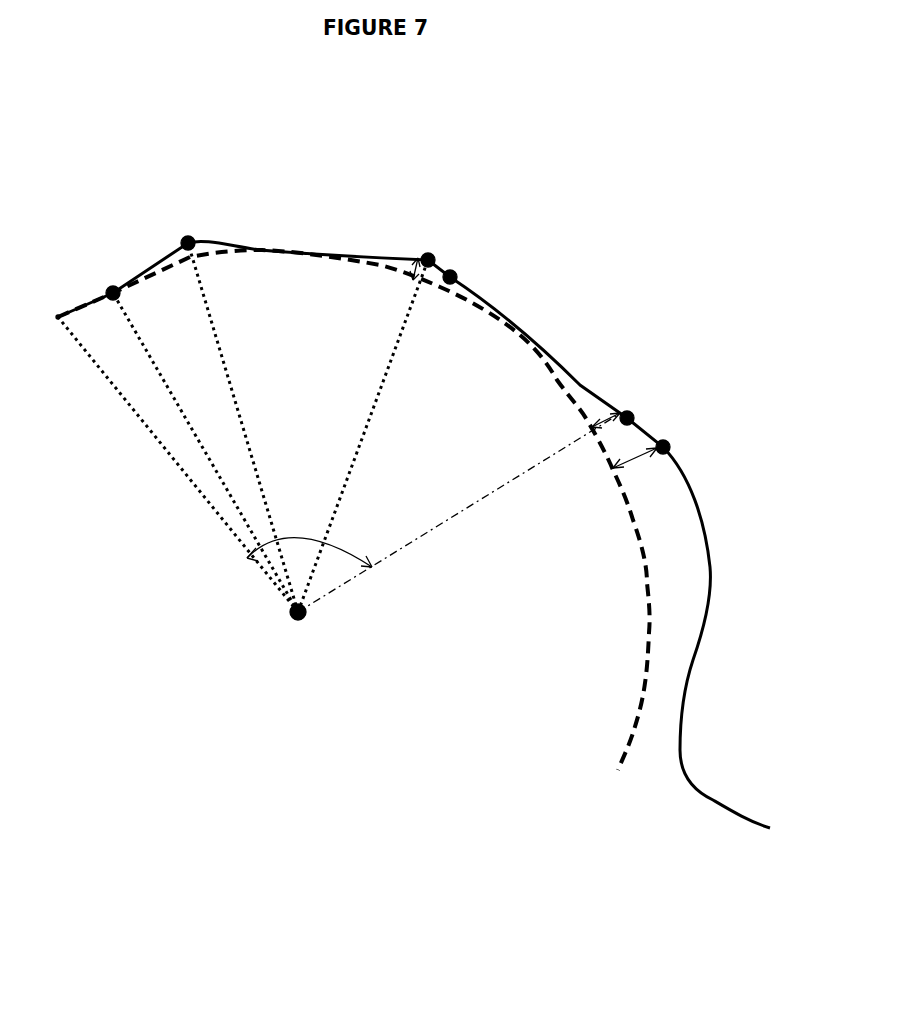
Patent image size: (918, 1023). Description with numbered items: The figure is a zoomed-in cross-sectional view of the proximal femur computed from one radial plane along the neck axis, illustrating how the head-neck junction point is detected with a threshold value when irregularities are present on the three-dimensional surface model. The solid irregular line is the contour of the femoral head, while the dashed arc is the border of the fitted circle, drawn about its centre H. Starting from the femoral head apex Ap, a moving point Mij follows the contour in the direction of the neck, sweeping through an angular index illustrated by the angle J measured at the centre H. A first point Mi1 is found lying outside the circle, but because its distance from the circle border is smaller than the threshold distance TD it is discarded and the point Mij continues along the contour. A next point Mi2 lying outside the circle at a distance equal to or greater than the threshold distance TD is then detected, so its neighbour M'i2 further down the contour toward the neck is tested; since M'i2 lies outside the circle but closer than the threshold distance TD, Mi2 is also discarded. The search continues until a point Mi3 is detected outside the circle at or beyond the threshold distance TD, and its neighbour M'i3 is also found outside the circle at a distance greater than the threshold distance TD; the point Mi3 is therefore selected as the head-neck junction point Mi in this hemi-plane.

The femoral head apex Ap is at (42, 299).
The point following the femoral head contour Mij is at (100, 275).
The first point lying outside the circle Mi1 is at (184, 221).
The next point lying outside the circle Mi2 is at (420, 236).
The neighbour of Mi2 on the femoral head contour M'i2 is at (471, 265).
The next point lying outside the circle selected as Mi Mi3 is at (677, 395).
The neighbour of Mi3 on the femoral head contour M'i3 is at (688, 449).
The center point H is at (290, 623).
The angular sector J is at (202, 465).
The threshold distance TD is at (413, 260).